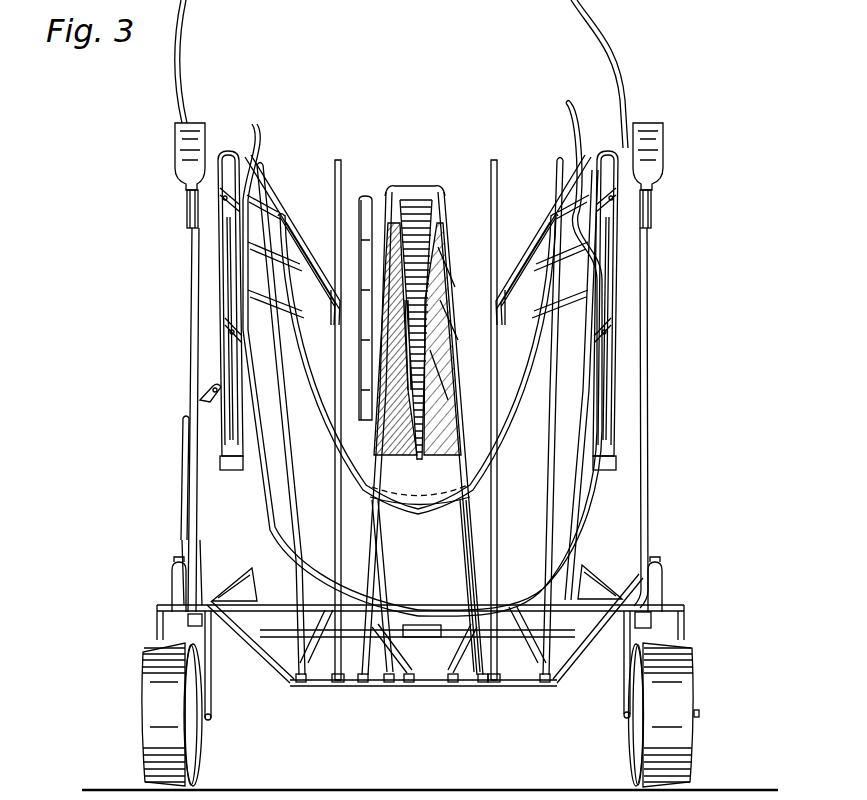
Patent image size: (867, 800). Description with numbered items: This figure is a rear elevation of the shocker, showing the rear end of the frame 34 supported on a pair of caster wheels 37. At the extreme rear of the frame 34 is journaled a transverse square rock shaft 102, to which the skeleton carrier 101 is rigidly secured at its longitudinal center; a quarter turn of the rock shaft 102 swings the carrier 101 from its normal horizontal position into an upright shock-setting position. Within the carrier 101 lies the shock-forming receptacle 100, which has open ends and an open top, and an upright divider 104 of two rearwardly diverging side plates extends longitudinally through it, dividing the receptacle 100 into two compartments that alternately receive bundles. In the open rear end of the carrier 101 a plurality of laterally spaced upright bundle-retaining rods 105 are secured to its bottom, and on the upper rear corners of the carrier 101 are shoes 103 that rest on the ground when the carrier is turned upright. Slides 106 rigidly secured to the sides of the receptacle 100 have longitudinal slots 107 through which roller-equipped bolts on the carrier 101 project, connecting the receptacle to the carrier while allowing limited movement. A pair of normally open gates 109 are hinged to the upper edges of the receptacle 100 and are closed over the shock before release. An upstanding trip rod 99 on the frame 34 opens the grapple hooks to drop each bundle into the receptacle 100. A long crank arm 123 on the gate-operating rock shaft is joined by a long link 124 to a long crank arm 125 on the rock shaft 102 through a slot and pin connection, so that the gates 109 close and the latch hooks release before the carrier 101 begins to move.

The frame 34 is at (651, 620).
The caster wheels 37 is at (420, 715).
The trip rod 99 is at (364, 222).
The shock-forming receptacle 100 is at (578, 480).
The skeleton carrier 101 is at (650, 424).
The rock shaft 102 is at (605, 612).
The shoes 103 is at (205, 130).
The divider 104 is at (423, 194).
The bundle-retaining rods 105 is at (338, 181).
The slides 106 is at (230, 470).
The slots 107 is at (230, 428).
The gates 109 is at (178, 57).
The crank arm 123 is at (212, 525).
The link 124 is at (206, 395).
The crank arm 125 is at (184, 440).